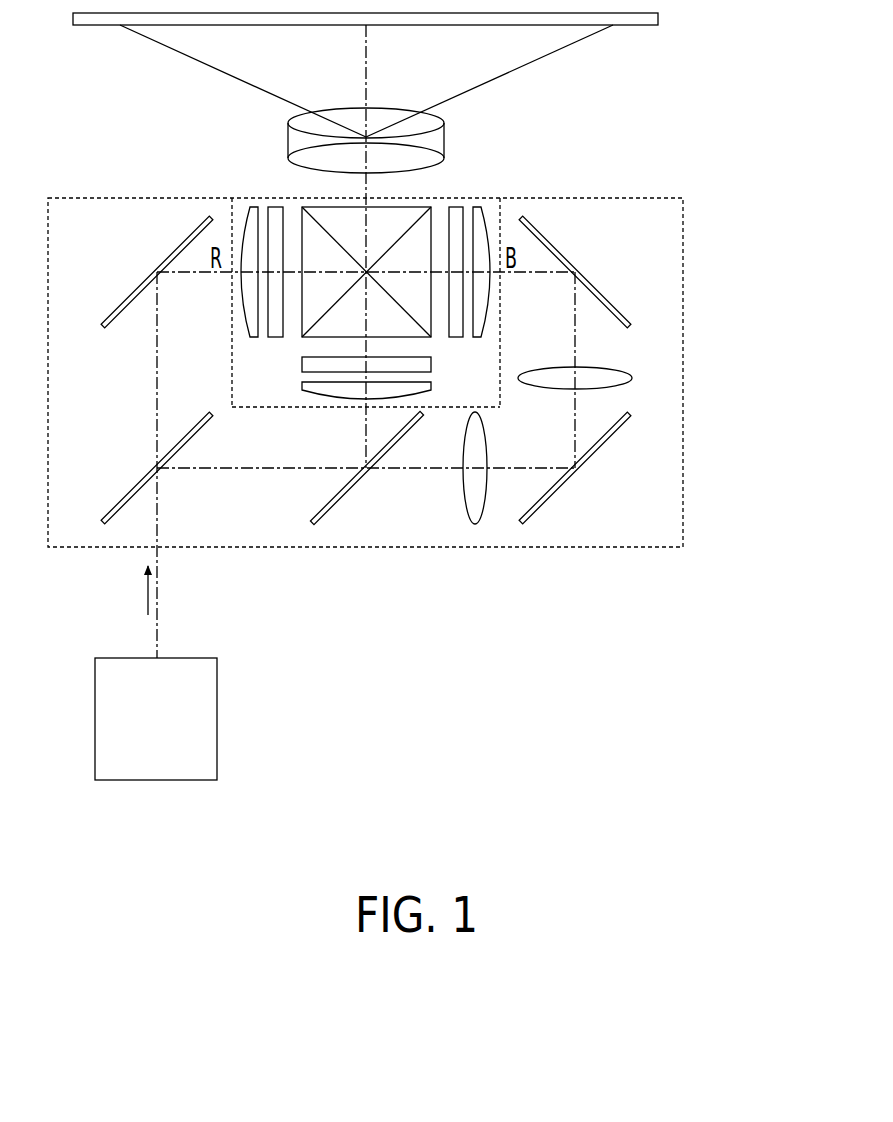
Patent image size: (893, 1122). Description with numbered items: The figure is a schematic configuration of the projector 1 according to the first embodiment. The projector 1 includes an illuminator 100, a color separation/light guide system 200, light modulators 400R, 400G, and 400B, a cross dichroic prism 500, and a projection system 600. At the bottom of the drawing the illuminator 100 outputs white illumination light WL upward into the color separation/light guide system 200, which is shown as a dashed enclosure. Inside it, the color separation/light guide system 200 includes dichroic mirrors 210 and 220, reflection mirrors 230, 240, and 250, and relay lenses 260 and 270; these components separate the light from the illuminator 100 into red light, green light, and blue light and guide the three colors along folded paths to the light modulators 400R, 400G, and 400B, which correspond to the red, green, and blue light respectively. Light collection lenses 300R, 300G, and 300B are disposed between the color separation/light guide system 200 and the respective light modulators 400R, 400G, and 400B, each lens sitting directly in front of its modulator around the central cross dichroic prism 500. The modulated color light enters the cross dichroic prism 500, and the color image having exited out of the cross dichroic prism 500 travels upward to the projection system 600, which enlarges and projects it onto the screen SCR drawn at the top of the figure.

The projector 1 is at (710, 80).
The illuminator 100 is at (207, 658).
The color separation/light guide system 200 is at (683, 527).
The dichroic mirror 210 is at (120, 498).
The dichroic mirror 220 is at (345, 489).
The reflection mirror 230 is at (98, 308).
The reflection mirror 240 is at (603, 455).
The reflection mirror 250 is at (627, 310).
The relay lens 260 is at (462, 487).
The relay lens 270 is at (623, 373).
The light collection lens 300R is at (250, 208).
The light collection lens 300G is at (302, 387).
The light collection lens 300B is at (477, 208).
The light modulator 400R is at (275, 207).
The light modulator 400G is at (302, 363).
The light modulator 400B is at (455, 208).
The cross dichroic prism 500 is at (418, 210).
The projection system 600 is at (288, 136).
The screen SCR is at (637, 26).
The white illumination light WL is at (145, 583).